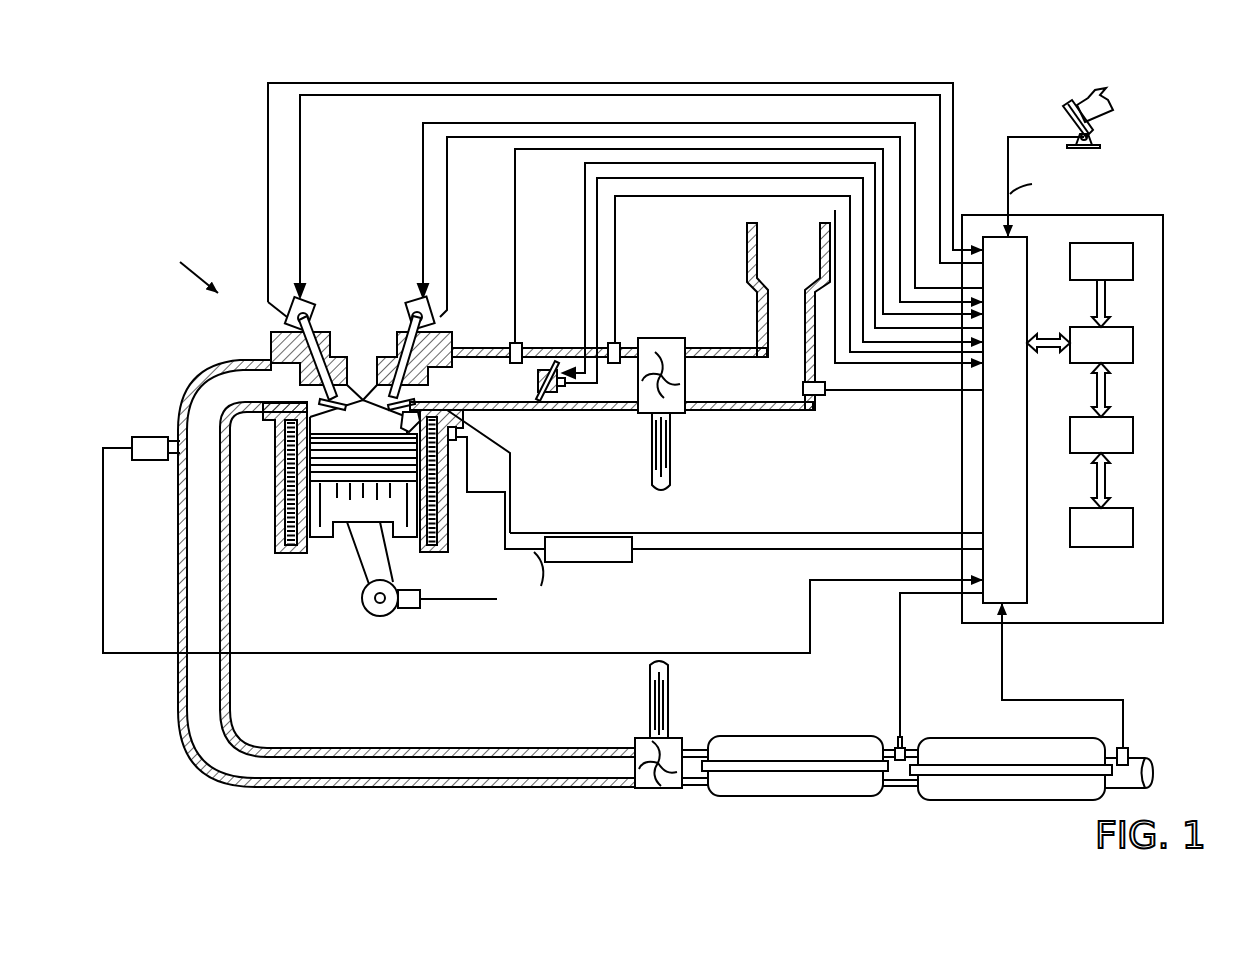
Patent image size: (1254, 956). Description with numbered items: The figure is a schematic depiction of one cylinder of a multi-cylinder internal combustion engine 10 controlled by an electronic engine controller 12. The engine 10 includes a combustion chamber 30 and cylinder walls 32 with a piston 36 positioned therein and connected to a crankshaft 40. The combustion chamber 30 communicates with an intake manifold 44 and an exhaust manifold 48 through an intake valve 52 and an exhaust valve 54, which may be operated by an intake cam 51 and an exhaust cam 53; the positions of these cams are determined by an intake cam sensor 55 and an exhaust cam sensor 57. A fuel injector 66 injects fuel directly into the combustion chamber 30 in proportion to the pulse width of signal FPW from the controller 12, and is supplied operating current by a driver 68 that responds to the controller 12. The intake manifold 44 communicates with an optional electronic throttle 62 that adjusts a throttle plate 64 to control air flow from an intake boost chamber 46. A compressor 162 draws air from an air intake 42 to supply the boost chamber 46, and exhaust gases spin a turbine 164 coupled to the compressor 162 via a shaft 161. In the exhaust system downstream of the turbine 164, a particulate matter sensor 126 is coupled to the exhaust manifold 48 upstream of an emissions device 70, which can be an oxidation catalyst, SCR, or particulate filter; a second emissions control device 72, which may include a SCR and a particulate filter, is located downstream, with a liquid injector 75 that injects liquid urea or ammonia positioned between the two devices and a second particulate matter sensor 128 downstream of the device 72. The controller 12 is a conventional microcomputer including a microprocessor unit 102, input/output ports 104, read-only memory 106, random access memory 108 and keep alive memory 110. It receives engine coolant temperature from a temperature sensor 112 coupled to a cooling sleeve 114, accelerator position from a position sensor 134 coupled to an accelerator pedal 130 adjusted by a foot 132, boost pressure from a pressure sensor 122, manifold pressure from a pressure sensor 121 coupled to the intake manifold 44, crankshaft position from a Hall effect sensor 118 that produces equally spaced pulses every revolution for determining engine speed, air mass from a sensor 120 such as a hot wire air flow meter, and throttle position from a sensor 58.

The internal combustion engine 10 is at (185, 271).
The electronic engine controller 12 is at (1156, 215).
The combustion chamber 30 is at (360, 420).
The cylinder walls 32 is at (312, 542).
The piston 36 is at (347, 510).
The crankshaft 40 is at (373, 613).
The air intake 42 is at (800, 266).
The intake manifold 44 is at (510, 391).
The intake boost chamber 46 is at (627, 391).
The exhaust manifold 48 is at (255, 398).
The intake cam 51 is at (415, 305).
The intake valve 52 is at (413, 394).
The exhaust cam 53 is at (308, 305).
The exhaust valve 54 is at (318, 398).
The intake cam sensor 55 is at (433, 322).
The exhaust cam sensor 57 is at (292, 313).
The throttle position sensor 58 is at (565, 390).
The electronic throttle 62 is at (530, 352).
The throttle plate 64 is at (546, 360).
The fuel injector 66 is at (462, 423).
The driver 68 is at (573, 562).
The emissions device 70 is at (765, 797).
The emissions control device 72 is at (980, 800).
The liquid injector 75 is at (907, 726).
The microprocessor unit 102 is at (1133, 345).
The input/output ports 104 is at (1030, 243).
The read-only memory 106 is at (1133, 262).
The random access memory 108 is at (1133, 435).
The keep alive memory 110 is at (1133, 525).
The temperature sensor 112 is at (455, 442).
The cooling sleeve 114 is at (437, 522).
The Hall effect sensor 118 is at (405, 608).
The air mass sensor 120 is at (825, 393).
The pressure sensor 121 is at (500, 348).
The pressure sensor 122 is at (618, 348).
The particulate matter sensor 126 is at (132, 441).
The particulate matter sensor 128 is at (1128, 748).
The accelerator pedal 130 is at (1063, 113).
The foot 132 is at (1110, 109).
The position sensor 134 is at (1100, 147).
The shaft 161 is at (650, 443).
The compressor 162 is at (685, 338).
The turbine 164 is at (640, 738).